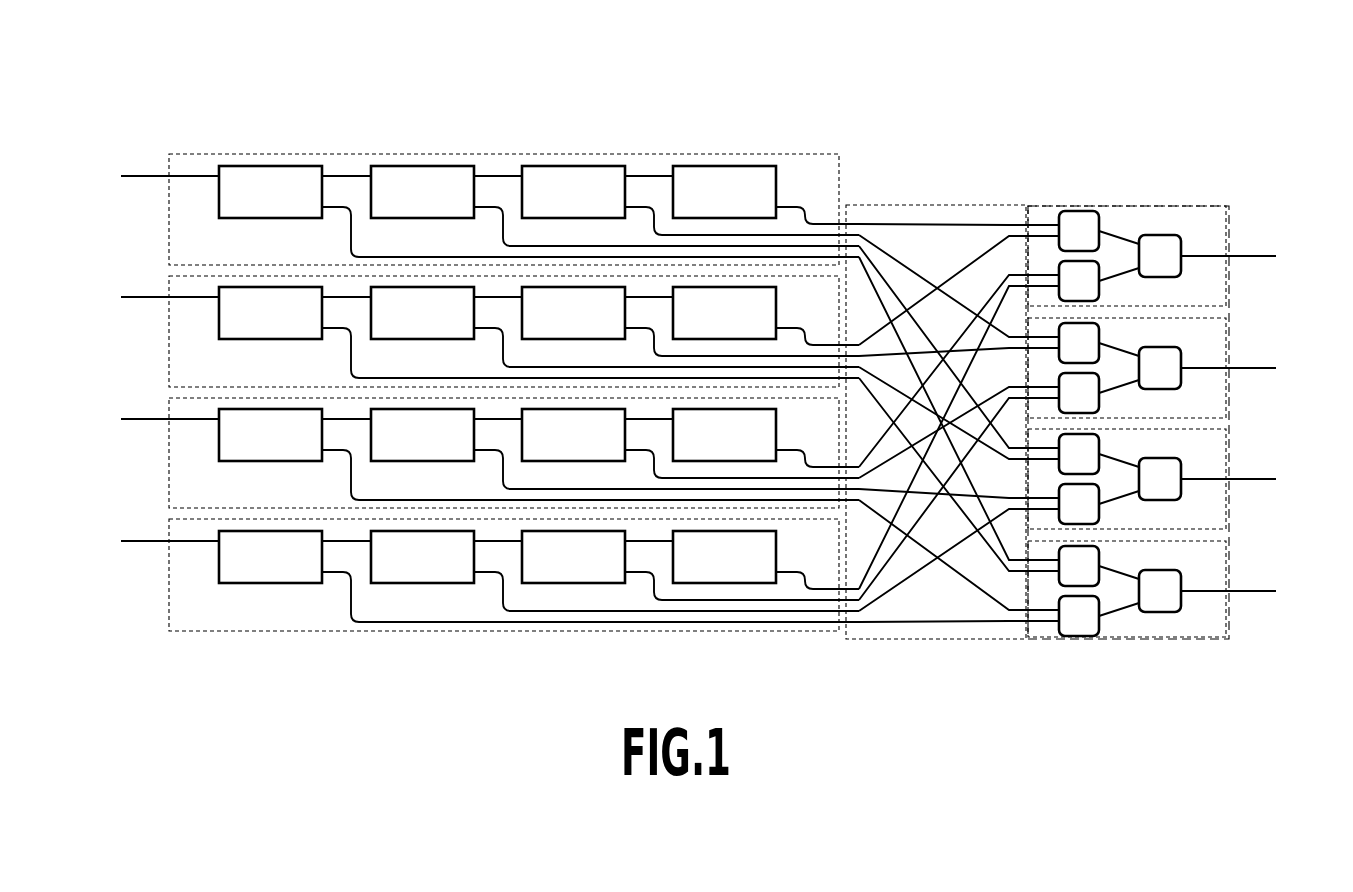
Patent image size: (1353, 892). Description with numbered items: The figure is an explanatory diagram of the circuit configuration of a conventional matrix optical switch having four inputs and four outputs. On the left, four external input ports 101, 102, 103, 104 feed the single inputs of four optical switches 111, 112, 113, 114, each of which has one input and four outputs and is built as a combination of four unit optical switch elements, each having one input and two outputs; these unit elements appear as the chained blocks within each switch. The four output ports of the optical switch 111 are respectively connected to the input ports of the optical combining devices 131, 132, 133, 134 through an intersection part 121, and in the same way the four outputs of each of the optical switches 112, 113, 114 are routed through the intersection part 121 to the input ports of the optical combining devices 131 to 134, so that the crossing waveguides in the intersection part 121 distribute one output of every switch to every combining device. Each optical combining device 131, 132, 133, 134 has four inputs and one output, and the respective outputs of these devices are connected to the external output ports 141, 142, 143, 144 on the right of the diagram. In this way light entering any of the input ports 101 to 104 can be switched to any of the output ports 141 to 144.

The external input port 101 is at (138, 175).
The external input port 102 is at (138, 298).
The external input port 103 is at (138, 418).
The external input port 104 is at (138, 540).
The optical switch 111 is at (195, 165).
The optical switch 112 is at (182, 330).
The optical switch 113 is at (182, 451).
The optical switch 114 is at (200, 634).
The intersection part 121 is at (907, 220).
The optical combining device 131 is at (1188, 218).
The optical combining device 132 is at (1215, 388).
The optical combining device 133 is at (1215, 508).
The optical combining device 134 is at (1185, 628).
The external output port 141 is at (1265, 253).
The external output port 142 is at (1265, 363).
The external output port 143 is at (1265, 475).
The external output port 144 is at (1265, 587).